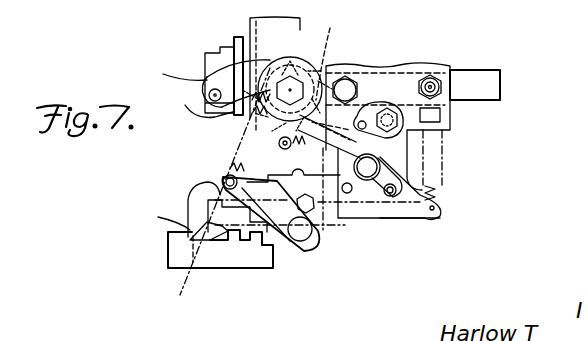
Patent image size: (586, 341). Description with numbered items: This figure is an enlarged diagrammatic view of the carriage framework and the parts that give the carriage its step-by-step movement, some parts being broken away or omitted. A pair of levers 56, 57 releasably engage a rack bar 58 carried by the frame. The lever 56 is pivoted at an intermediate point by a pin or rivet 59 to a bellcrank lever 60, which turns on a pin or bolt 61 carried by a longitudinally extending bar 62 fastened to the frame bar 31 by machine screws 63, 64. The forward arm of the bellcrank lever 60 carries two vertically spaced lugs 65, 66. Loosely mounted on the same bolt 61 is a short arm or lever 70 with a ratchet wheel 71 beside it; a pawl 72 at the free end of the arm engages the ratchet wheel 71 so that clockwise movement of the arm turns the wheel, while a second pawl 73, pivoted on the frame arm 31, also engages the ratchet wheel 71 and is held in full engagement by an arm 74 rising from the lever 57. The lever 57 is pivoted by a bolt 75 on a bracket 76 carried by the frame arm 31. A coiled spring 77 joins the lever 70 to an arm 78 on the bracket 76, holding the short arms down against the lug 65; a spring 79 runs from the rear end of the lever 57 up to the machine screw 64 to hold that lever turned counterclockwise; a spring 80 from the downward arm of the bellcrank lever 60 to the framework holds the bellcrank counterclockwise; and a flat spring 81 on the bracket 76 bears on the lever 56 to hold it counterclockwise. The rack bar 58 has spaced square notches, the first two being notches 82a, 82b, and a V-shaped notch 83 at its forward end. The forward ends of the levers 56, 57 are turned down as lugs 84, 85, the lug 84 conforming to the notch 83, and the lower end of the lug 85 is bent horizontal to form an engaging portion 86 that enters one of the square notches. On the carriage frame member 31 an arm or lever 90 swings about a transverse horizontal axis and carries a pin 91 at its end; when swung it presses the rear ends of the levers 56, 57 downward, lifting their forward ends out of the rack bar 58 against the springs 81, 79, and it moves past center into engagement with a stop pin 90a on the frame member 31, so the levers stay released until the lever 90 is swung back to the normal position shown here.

The frame bar 31 is at (372, 64).
The lever 56 is at (197, 192).
The lever 57 is at (212, 198).
The rack bar 58 is at (200, 270).
The pin or rivet 59 is at (320, 232).
The bellcrank lever 60 is at (210, 78).
The pin or bolt 61 is at (290, 76).
The longitudinally extending bar 62 is at (480, 72).
The machine screw 63 is at (345, 76).
The machine screw 64 is at (430, 75).
The lug 65 is at (198, 103).
The lug 66 is at (230, 54).
The arm or lever 70 is at (174, 72).
The ratchet wheel 71 is at (333, 53).
The pawl 72 is at (240, 80).
The second pawl 73 is at (425, 145).
The arm 74 is at (340, 165).
The bolt 75 is at (300, 252).
The bracket 76 is at (316, 242).
The coiled spring 77 is at (225, 181).
The arm 78 is at (262, 247).
The spring 79 is at (438, 192).
The spring 80 is at (350, 117).
The flat spring 81 is at (250, 178).
The square notch 82a is at (232, 244).
The square notch 82b is at (245, 244).
The V-shaped notch 83 is at (168, 240).
The lug 84 is at (161, 215).
The lug 85 is at (210, 222).
The engaging portion 86 is at (200, 264).
The arm or lever 90 is at (397, 217).
The stop pin 90a is at (350, 192).
The pin 91 is at (430, 215).